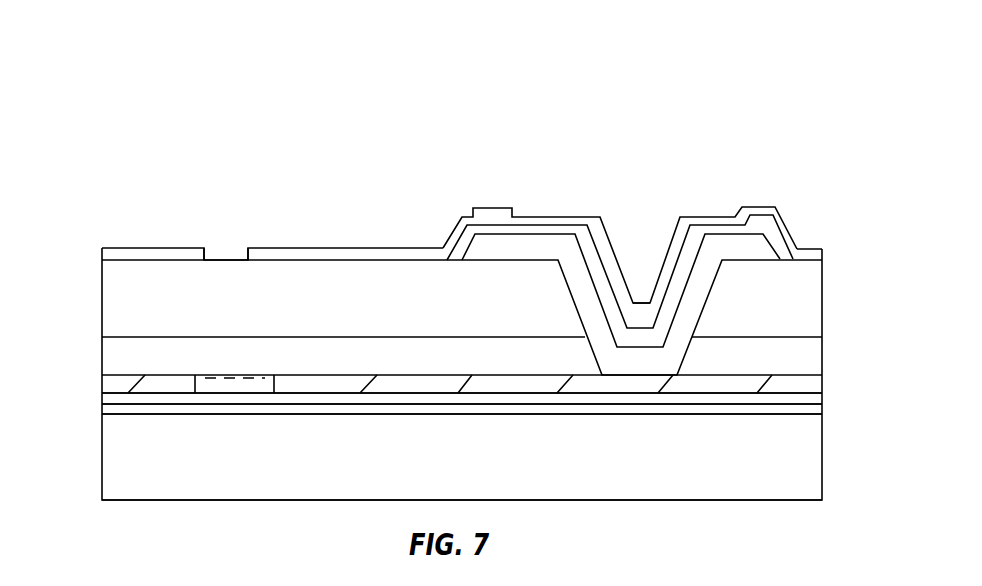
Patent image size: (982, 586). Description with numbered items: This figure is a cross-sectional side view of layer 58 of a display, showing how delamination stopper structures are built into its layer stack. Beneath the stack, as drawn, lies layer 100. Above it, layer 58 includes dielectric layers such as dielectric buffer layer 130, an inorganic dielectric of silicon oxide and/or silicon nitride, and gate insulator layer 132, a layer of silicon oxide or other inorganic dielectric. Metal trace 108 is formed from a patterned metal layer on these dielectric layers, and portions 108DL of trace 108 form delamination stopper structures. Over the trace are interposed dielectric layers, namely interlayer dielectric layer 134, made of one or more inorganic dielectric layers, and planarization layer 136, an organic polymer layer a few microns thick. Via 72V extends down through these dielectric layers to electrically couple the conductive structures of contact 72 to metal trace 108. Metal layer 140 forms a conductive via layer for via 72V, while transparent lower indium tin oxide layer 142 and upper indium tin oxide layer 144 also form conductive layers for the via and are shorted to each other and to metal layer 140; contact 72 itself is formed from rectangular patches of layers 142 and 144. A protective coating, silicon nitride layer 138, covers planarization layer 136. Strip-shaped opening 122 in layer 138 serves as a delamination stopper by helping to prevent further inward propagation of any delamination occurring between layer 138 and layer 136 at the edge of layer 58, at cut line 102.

The layer 58 is at (795, 90).
The contact 72 is at (822, 165).
The via 72V is at (650, 230).
The substrate 100 is at (815, 456).
The cut line 102 is at (102, 224).
The metal trace 108 is at (107, 384).
The portions of trace 108DL is at (195, 372).
The opening 122 is at (248, 243).
The dielectric buffer layer 130 is at (815, 410).
The gate insulator layer 132 is at (815, 399).
The interlayer dielectric layer 134 is at (107, 355).
The planarization layer 136 is at (107, 298).
The silicon nitride layer 138 is at (153, 249).
The metal layer 140 is at (543, 246).
The lower indium tin oxide layer 142 is at (583, 238).
The upper indium tin oxide layer 144 is at (525, 223).